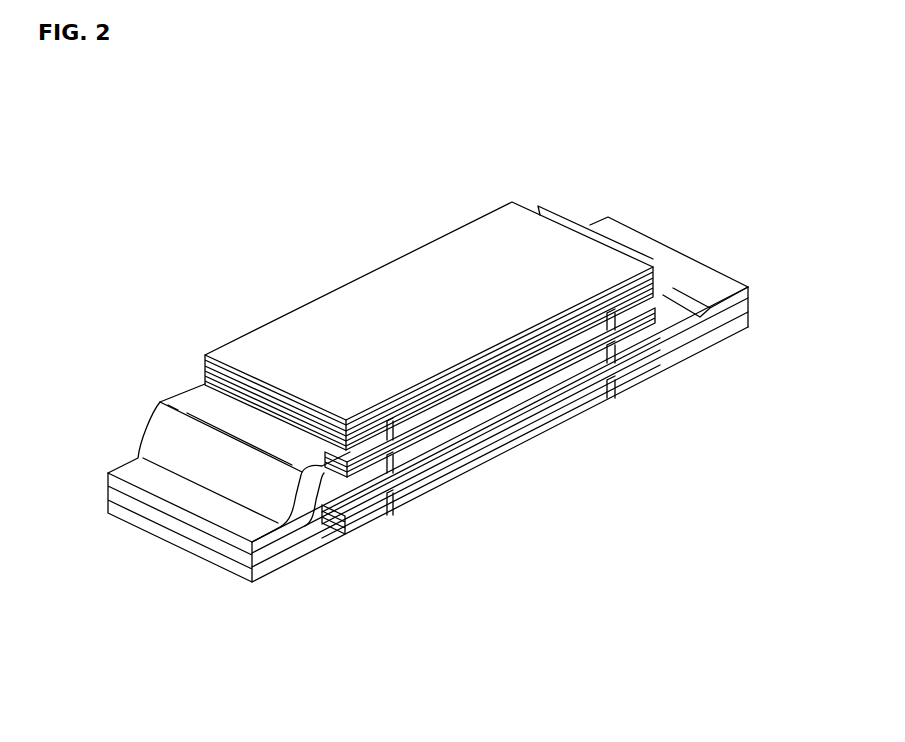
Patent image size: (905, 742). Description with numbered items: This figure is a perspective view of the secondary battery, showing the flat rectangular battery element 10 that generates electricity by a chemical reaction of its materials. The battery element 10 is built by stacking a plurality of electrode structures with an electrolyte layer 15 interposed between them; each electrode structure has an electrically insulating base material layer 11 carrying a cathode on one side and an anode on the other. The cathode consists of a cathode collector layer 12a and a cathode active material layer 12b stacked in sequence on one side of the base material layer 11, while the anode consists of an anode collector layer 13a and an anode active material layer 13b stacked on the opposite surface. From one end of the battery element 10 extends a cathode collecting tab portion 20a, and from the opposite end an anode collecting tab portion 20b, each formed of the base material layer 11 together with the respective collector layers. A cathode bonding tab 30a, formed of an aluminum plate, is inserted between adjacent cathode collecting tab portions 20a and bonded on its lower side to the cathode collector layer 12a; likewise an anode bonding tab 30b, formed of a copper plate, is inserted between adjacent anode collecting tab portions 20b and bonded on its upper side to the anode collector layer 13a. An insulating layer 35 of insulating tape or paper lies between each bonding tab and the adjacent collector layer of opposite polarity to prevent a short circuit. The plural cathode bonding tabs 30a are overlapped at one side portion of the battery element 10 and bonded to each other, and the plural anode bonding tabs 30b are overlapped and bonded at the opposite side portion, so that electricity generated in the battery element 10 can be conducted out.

The battery element 10 is at (343, 281).
The cathode collecting tab portion 20a is at (221, 343).
The anode collecting tab portion 20b is at (488, 205).
The cathode bonding tab 30a is at (152, 443).
The anode bonding tab 30b is at (707, 280).
The insulating layer 35 is at (658, 376).
The base material layer 11 is at (497, 435).
The cathode collector layer 12a is at (460, 447).
The cathode active material layer 12b is at (422, 458).
The anode collector layer 13a is at (530, 423).
The anode active material layer 13b is at (565, 413).
The electrolyte layer 15 is at (410, 495).